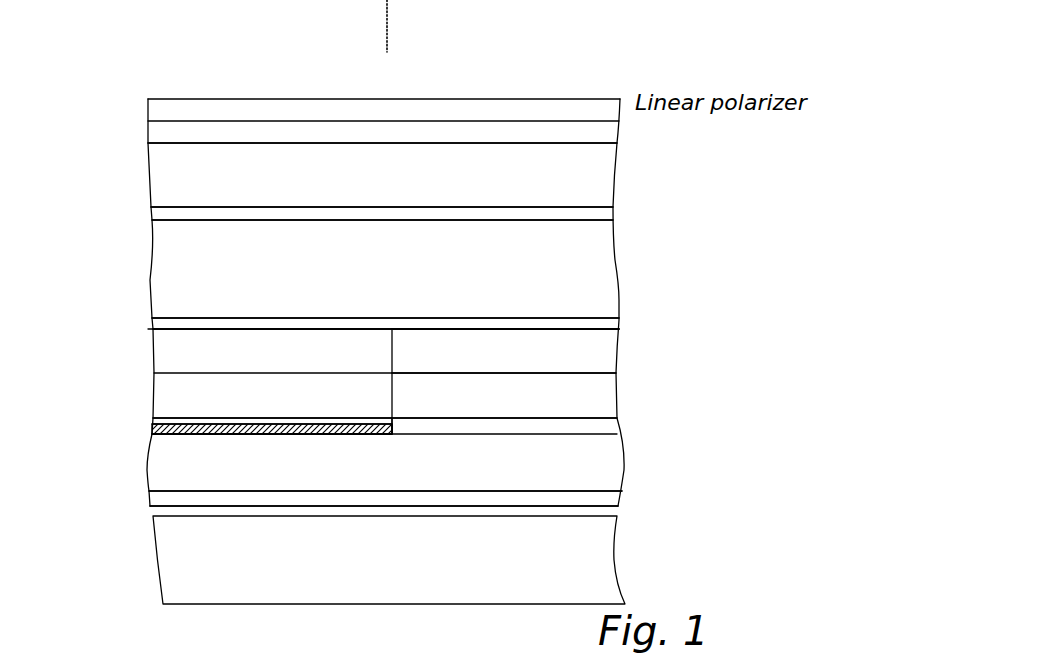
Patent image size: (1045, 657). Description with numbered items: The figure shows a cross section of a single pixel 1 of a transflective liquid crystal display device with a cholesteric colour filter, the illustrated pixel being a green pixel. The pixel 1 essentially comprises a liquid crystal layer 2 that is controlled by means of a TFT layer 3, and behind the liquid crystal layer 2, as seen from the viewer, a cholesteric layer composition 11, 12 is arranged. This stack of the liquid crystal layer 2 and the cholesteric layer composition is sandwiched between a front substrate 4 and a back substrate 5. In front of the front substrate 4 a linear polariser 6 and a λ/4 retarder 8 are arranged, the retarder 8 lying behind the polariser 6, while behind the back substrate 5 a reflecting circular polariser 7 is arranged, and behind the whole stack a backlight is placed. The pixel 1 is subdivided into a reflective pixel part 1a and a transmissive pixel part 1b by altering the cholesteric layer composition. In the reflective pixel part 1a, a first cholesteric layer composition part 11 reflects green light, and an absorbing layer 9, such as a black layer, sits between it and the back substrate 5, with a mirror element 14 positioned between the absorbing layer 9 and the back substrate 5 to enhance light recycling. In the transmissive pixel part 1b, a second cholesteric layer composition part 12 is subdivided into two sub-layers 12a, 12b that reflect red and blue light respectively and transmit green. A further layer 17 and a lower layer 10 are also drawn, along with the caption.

The pixel 1 is at (624, 64).
The reflective pixel part 1a is at (246, 72).
The transmissive pixel part 1b is at (505, 70).
The liquid crystal layer 2 is at (151, 246).
The TFT layer 3 is at (150, 213).
The front substrate 4 is at (148, 163).
The back substrate 5 is at (147, 470).
The linear polariser 6 is at (148, 107).
The reflecting circular polariser 7 is at (150, 503).
The λ/4 retarder 8 is at (619, 129).
The absorbing layer 9 is at (150, 424).
The backlight 10 is at (153, 558).
The first cholesteric layer composition part 11 is at (218, 326).
The second cholesteric layer composition part 12 is at (532, 327).
The red reflecting cholesteric sub-layer 12a is at (612, 345).
The blue reflecting cholesteric sub-layer 12b is at (606, 396).
The mirror element 14 is at (150, 432).
The interlayer 17 is at (615, 318).